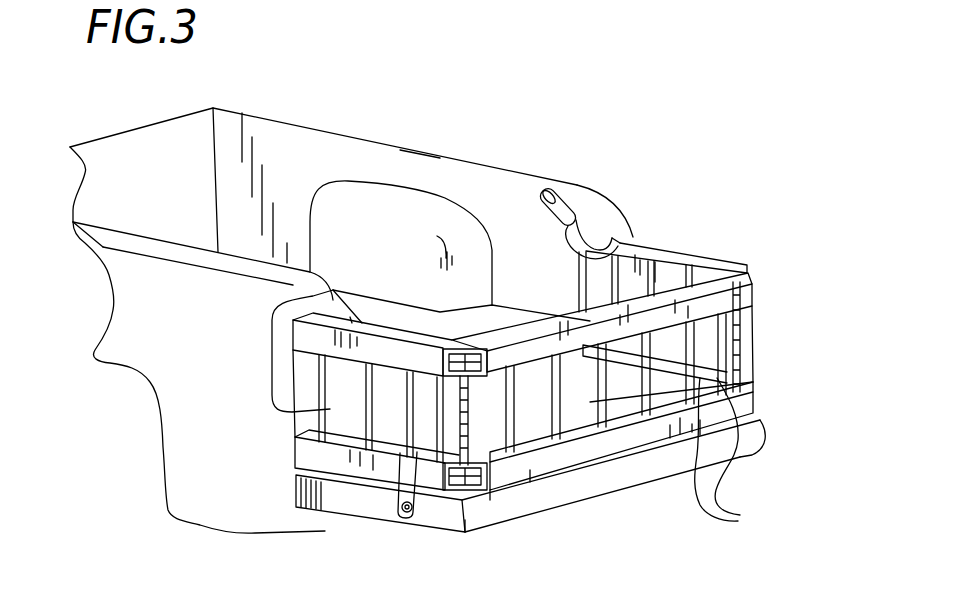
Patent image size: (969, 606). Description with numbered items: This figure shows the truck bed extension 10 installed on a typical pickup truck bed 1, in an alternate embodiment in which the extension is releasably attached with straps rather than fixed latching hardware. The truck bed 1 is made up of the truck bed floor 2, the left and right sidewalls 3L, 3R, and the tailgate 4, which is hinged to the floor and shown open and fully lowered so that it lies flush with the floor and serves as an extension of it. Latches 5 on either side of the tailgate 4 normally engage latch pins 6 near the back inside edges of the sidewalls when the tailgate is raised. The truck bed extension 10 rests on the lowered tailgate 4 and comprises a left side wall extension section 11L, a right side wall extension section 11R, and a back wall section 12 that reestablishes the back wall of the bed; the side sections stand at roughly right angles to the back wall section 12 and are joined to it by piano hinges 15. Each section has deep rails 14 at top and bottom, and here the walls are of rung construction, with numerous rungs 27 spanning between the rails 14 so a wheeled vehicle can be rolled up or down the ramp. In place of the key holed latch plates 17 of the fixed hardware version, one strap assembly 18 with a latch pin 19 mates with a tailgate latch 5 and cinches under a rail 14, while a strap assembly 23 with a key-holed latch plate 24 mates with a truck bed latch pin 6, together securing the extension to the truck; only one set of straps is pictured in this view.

The truck bed 1 is at (310, 112).
The truck bed floor 2 is at (513, 306).
The truck bed left sidewall 3L is at (112, 230).
The truck bed right sidewall 3R is at (420, 150).
The tailgate 4 is at (350, 503).
The latch 5 is at (407, 515).
The latch pin 6 is at (542, 188).
The truck bed extension 10 is at (674, 224).
The left side wall extension section 11L is at (313, 390).
The right side wall extension section 11R is at (686, 258).
The back wall section 12 is at (485, 485).
The rail 14 is at (717, 260).
The piano hinge 15 is at (458, 422).
The key holed latch plate 17 is at (350, 317).
The strap assembly 18 is at (447, 508).
The latch pin 19 is at (402, 510).
The strap assembly 23 is at (612, 212).
The latch plate 24 is at (570, 222).
The rung 27 is at (613, 285).